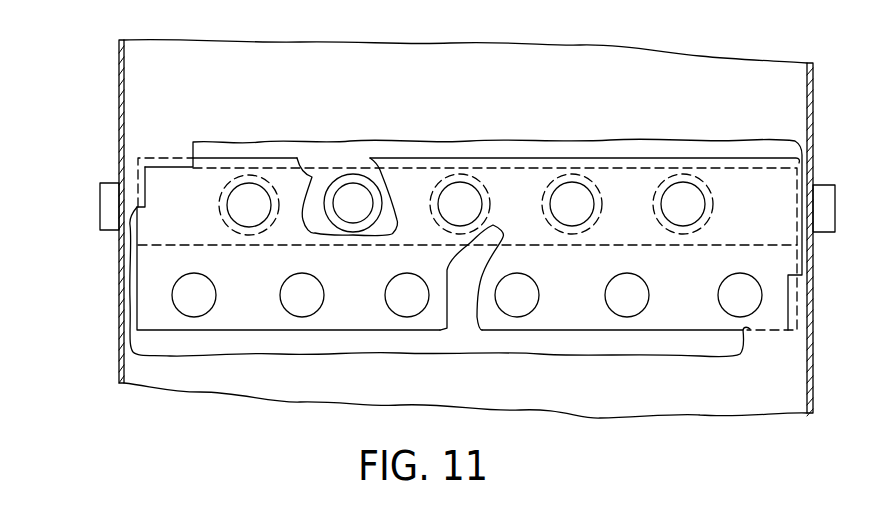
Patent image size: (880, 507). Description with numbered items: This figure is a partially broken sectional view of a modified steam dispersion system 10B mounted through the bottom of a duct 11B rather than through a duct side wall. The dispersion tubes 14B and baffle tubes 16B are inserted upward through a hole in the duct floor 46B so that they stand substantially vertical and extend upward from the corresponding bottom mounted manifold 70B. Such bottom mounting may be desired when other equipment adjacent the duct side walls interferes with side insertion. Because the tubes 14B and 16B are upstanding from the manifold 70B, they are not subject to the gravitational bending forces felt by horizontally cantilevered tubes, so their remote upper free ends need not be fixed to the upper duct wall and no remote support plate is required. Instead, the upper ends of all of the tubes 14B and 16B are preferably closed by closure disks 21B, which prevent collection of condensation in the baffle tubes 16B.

The system 10B is at (622, 149).
The duct 11B is at (119, 126).
The dispersion tubes 14B is at (249, 183).
The baffle tubes 16B is at (302, 317).
The closure disks 21B is at (292, 295).
The duct floor 46B is at (151, 187).
The manifold 70B is at (333, 170).